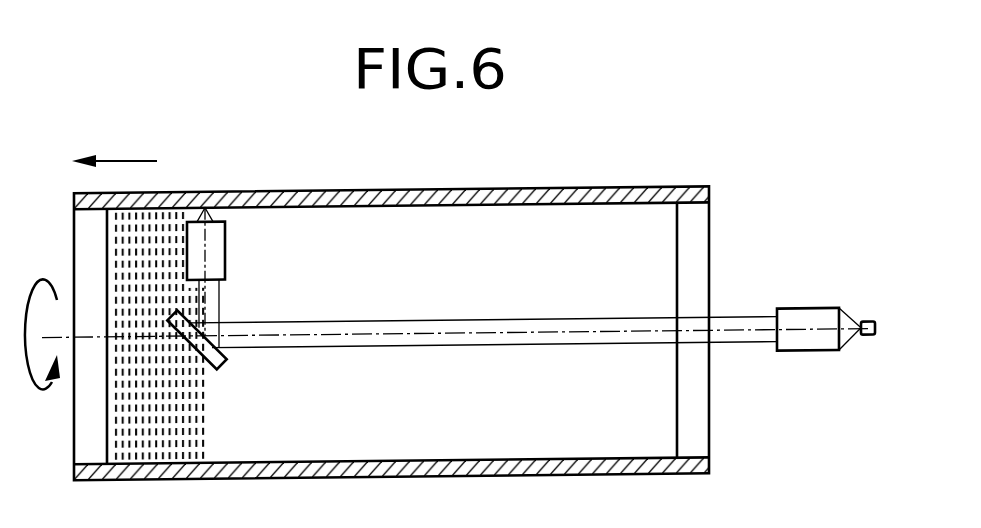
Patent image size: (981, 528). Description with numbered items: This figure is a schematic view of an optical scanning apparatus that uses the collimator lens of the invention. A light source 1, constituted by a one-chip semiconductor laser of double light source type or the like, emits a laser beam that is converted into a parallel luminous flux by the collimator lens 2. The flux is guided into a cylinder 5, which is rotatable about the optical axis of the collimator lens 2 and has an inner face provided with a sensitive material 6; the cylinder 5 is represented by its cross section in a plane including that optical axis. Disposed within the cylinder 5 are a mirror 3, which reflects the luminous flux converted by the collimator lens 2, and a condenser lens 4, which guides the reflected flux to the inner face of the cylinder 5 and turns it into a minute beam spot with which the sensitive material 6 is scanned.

The light source 1 is at (864, 322).
The collimator lens 2 is at (794, 312).
The mirror 3 is at (224, 364).
The condenser lens 4 is at (224, 257).
The cylinder 5 is at (189, 471).
The sensitive material 6 is at (333, 440).